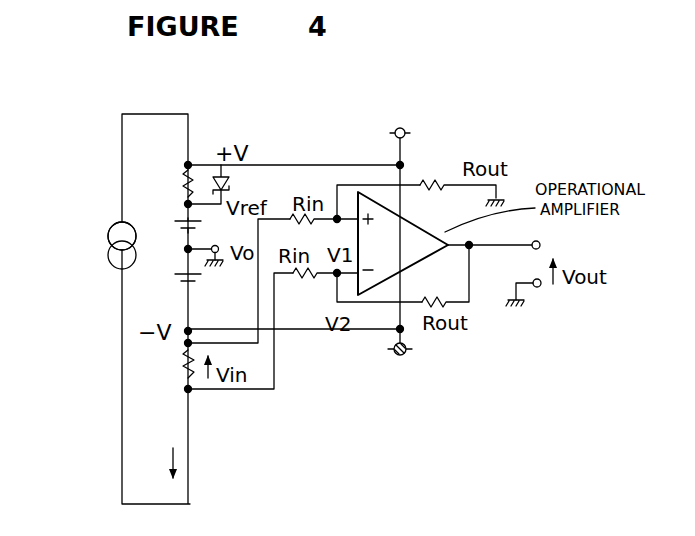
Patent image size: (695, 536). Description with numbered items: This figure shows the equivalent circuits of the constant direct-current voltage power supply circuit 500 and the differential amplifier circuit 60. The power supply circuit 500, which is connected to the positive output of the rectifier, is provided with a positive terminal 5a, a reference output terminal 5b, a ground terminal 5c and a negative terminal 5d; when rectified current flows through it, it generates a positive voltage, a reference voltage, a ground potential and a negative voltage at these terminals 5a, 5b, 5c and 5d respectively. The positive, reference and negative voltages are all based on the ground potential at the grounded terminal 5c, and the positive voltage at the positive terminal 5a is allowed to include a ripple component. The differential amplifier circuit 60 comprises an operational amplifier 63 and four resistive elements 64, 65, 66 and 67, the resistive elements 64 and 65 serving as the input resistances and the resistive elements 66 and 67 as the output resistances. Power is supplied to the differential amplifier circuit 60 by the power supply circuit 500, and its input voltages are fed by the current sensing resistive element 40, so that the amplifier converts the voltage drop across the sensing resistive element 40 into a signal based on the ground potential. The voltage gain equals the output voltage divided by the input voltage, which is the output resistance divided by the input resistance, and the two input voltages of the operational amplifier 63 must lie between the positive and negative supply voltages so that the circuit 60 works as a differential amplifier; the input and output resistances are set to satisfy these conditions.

The constant d.c. voltage power supply circuit 500 is at (104, 248).
The positive terminal 5a is at (401, 127).
The output terminal 5b is at (237, 170).
The ground terminal 5c is at (219, 244).
The negative terminal 5d is at (398, 357).
The differential amplifier circuit 60 is at (381, 203).
The operational amplifier 63 is at (415, 236).
The resistive element 64 is at (293, 214).
The resistive element 65 is at (305, 279).
The resistive element 66 is at (432, 180).
The resistive element 67 is at (431, 297).
The sensing resistive element 40 is at (183, 366).